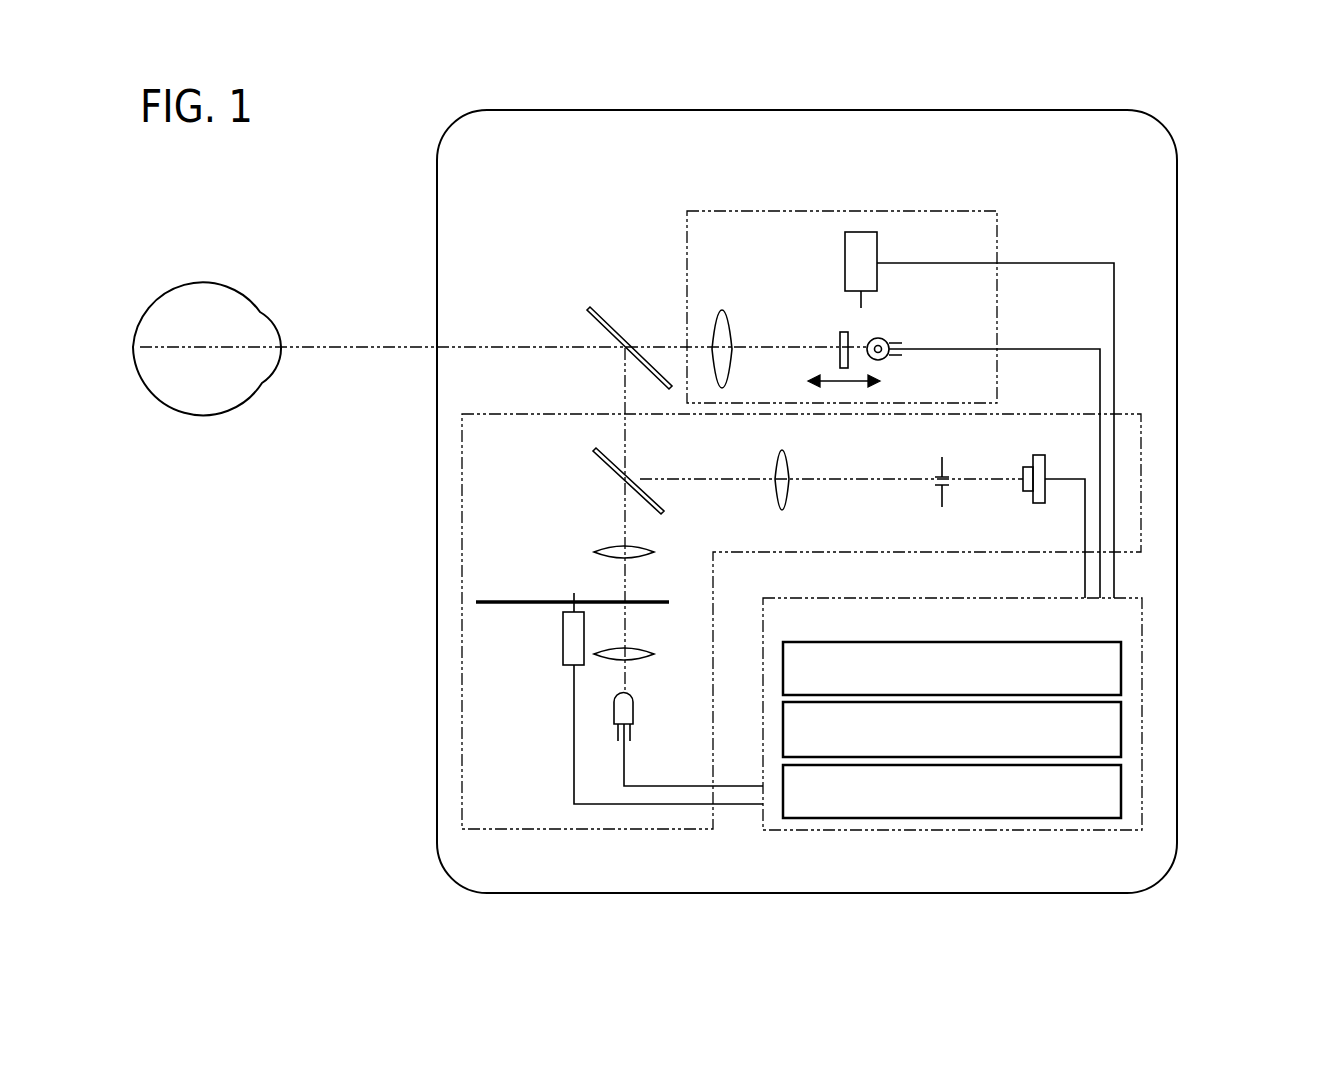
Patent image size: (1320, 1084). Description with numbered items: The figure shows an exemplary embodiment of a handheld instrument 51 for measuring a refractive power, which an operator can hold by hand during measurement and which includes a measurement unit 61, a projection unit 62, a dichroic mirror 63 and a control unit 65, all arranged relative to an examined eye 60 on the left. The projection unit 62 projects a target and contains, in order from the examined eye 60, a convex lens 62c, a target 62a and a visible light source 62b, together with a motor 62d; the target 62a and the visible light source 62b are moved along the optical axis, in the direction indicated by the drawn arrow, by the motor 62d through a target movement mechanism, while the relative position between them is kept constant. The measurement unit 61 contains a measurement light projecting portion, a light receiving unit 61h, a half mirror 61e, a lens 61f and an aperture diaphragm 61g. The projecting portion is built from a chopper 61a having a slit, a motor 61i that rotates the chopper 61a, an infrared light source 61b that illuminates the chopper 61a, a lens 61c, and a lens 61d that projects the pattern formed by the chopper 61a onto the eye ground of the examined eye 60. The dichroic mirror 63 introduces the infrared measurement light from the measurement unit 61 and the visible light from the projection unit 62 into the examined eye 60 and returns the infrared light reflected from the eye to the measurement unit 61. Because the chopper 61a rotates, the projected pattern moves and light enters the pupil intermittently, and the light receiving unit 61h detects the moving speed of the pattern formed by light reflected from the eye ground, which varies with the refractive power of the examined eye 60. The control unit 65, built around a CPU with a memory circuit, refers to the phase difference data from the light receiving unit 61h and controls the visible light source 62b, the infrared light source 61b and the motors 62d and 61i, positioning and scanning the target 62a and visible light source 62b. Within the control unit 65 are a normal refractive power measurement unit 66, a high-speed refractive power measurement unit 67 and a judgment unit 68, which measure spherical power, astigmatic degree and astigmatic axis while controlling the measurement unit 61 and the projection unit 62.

The instrument for measuring a refractive power 51 is at (638, 893).
The examined eye 60 is at (237, 307).
The measurement unit 61 is at (480, 567).
The chopper 61a is at (655, 604).
The infrared light source 61b is at (633, 707).
The lens 61c is at (638, 656).
The lens 61d is at (636, 555).
The half mirror 61e is at (593, 452).
The lens 61f is at (784, 465).
The aperture diaphragm 61g is at (937, 477).
The light receiving unit 61h is at (1040, 470).
The motor 61i is at (563, 636).
The projection unit 62 is at (753, 222).
The target 62a is at (840, 332).
The visible light source 62b is at (888, 338).
The convex lens 62c is at (722, 312).
The motor 62d is at (870, 250).
The dichroic mirror 63 is at (589, 309).
The control unit 65 is at (1142, 627).
The normal refractive power measurement unit 66 is at (1121, 668).
The high-speed refractive power measurement unit 67 is at (1121, 722).
The judgment unit 68 is at (1121, 790).